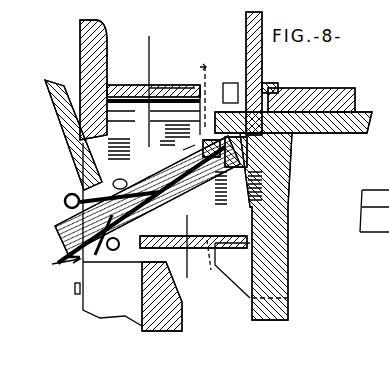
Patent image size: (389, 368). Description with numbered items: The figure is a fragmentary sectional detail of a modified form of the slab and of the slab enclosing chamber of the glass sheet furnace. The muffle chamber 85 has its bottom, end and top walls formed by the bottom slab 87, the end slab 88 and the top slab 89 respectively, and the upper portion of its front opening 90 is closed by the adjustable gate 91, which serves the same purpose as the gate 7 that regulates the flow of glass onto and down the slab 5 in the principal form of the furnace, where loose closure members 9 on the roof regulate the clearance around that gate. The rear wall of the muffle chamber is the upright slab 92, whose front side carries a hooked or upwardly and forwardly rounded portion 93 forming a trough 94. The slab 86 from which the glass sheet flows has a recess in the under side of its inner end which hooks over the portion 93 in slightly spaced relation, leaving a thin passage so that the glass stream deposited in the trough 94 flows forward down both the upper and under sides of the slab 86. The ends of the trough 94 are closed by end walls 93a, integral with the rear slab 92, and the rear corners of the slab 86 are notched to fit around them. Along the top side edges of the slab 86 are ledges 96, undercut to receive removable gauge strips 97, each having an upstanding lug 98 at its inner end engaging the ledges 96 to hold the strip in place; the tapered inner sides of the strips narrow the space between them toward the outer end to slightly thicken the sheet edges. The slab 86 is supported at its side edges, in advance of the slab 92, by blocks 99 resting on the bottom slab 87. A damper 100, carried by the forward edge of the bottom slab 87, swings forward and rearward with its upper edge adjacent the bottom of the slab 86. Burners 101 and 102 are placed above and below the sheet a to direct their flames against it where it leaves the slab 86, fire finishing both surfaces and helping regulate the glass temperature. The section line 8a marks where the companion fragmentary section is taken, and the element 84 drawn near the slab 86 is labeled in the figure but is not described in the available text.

The slab 5 is at (350, 125).
The gate 7 is at (246, 37).
The section line 8a— 8a is at (205, 161).
The closure members 9 is at (168, 157).
The pin 84 is at (185, 150).
The muffle chamber 85 is at (121, 153).
The slab 86 is at (100, 220).
The bottom slab 87 is at (206, 272).
The end slab 88 is at (163, 140).
The top slab 89 is at (165, 90).
The front opening 90 is at (82, 184).
The adjustable gate 91 is at (78, 144).
The upright slab 92 is at (243, 201).
The hooked portion 93 is at (250, 181).
The end walls 93a is at (268, 96).
The trough 94 is at (217, 192).
The ledges 96 is at (388, 245).
The gauge strips 97 is at (140, 182).
The upstanding lugs 98 is at (135, 188).
The supporting blocks 99 is at (151, 195).
The damper 100 is at (133, 252).
The burner 101 is at (65, 202).
The burner 102 is at (112, 252).
The sheet a is at (59, 263).